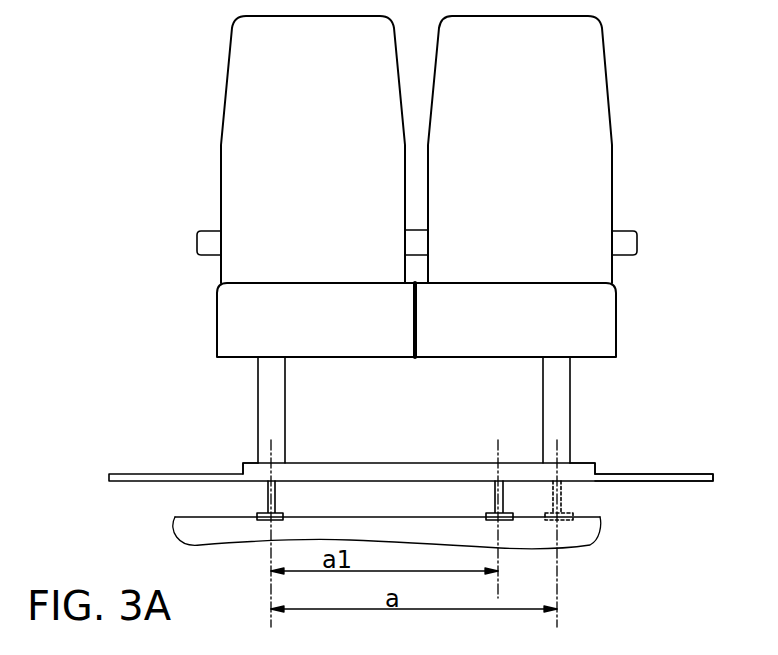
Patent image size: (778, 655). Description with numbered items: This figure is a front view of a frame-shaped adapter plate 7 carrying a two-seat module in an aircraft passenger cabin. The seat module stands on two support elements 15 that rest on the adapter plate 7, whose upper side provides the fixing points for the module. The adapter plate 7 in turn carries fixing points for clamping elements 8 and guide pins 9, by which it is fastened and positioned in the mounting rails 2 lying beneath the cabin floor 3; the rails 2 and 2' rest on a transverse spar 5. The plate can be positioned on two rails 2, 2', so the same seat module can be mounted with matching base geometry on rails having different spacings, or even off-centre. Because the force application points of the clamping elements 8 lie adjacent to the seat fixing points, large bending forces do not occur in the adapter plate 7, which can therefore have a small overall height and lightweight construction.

The support element 15 is at (258, 380).
The adapter plate 7 is at (413, 467).
The clamping element 8 is at (250, 450).
The guide pin 9 is at (580, 448).
The cabin floor 3 is at (707, 472).
The mounting rail 2 is at (354, 500).
The mounting rail 2' is at (594, 500).
The transverse spar 5 is at (592, 528).